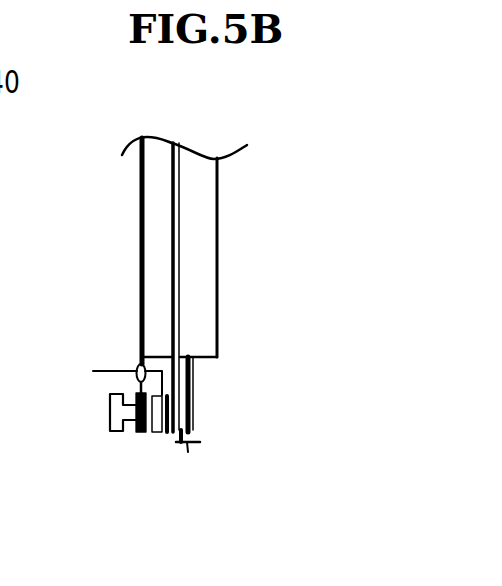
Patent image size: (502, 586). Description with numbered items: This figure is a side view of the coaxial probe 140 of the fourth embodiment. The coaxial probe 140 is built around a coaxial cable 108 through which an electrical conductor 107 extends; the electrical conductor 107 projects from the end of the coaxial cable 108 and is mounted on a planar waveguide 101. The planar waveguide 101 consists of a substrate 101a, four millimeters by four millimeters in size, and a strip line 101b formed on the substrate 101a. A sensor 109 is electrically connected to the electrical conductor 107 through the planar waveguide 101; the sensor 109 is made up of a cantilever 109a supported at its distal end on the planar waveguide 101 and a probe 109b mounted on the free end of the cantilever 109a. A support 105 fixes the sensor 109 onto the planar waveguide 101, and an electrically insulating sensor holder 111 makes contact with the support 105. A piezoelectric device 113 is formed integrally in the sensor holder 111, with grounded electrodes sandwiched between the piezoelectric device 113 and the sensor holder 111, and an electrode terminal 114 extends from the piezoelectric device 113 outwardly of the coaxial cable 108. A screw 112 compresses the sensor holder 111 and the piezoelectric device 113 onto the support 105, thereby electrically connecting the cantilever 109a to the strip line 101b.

The coaxial probe 140 is at (356, 163).
The coaxial cable 108 is at (112, 352).
The electrical conductor 107 is at (282, 237).
The electrode terminal 114 is at (114, 368).
The screw 112 is at (110, 412).
The sensor holder 111 is at (147, 432).
The piezoelectric device 113 is at (155, 434).
The support 105 is at (166, 433).
The planar waveguide 101 is at (328, 420).
The substrate 101a is at (254, 405).
The strip line 101b is at (254, 365).
The sensor 109 is at (248, 519).
The cantilever 109a is at (169, 436).
The probe 109b is at (176, 437).